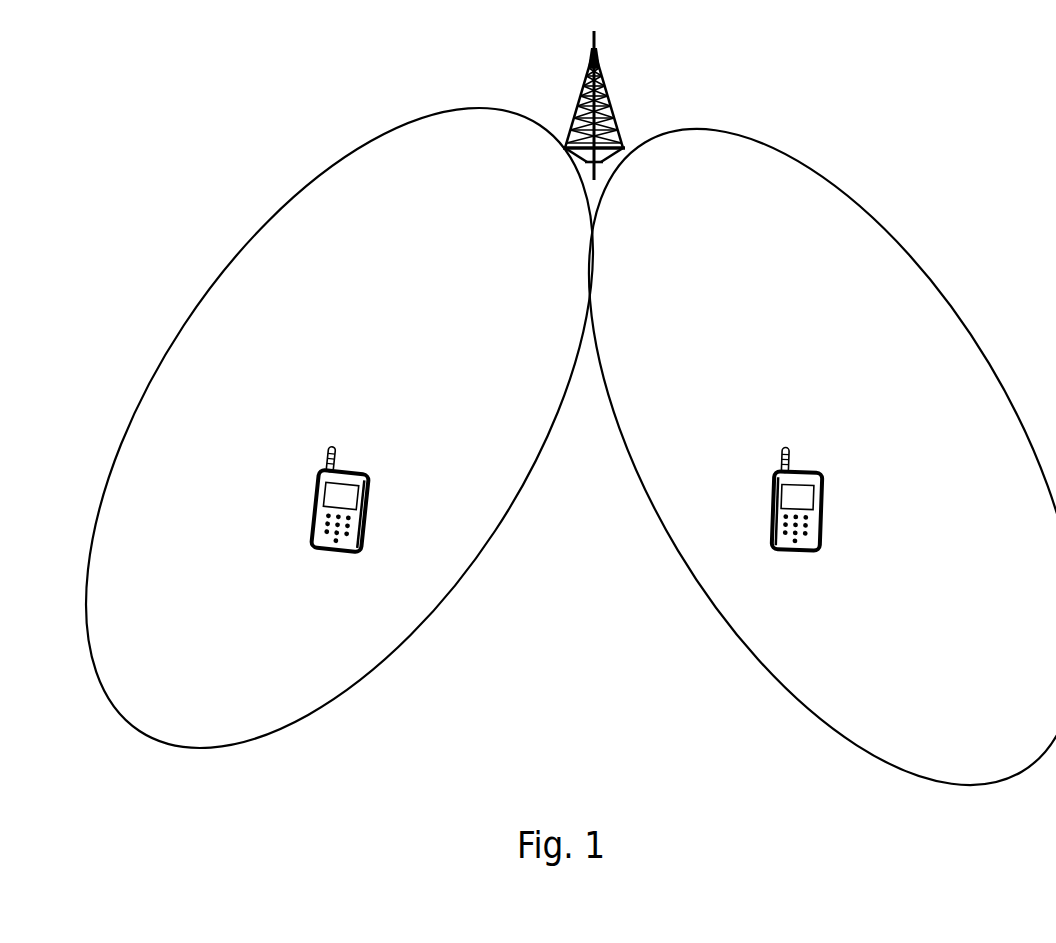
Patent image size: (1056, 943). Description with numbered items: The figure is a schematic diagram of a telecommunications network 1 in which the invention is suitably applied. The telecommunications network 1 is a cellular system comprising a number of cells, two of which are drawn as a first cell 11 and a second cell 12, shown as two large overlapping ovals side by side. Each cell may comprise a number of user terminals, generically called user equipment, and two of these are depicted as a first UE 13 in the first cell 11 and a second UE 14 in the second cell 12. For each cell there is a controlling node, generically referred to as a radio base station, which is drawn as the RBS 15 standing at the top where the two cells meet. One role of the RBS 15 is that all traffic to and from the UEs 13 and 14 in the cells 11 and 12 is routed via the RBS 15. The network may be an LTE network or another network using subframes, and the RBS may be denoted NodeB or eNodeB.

The telecommunications network 1 is at (303, 41).
The first cell 11 is at (437, 306).
The second cell 12 is at (777, 306).
The first UE 13 is at (320, 473).
The second UE 14 is at (823, 480).
The radio base station 15 is at (607, 97).